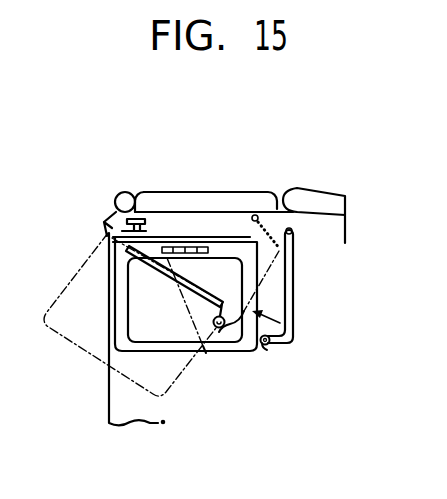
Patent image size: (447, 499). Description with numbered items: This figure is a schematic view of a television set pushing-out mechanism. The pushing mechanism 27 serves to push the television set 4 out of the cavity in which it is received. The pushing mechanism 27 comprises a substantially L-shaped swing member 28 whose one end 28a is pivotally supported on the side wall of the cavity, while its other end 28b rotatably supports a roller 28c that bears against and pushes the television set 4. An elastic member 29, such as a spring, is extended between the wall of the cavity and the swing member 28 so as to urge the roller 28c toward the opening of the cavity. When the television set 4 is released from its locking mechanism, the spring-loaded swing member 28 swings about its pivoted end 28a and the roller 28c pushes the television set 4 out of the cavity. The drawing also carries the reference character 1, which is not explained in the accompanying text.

The apparatus body 1 is at (334, 184).
The television set 4 is at (203, 355).
The pushing mechanism 27 is at (306, 320).
The swing member 28 is at (293, 283).
The one end of swing member 28a is at (291, 226).
The other end of swing member 28b is at (284, 356).
The roller 28c is at (267, 352).
The elastic member 29 is at (272, 238).